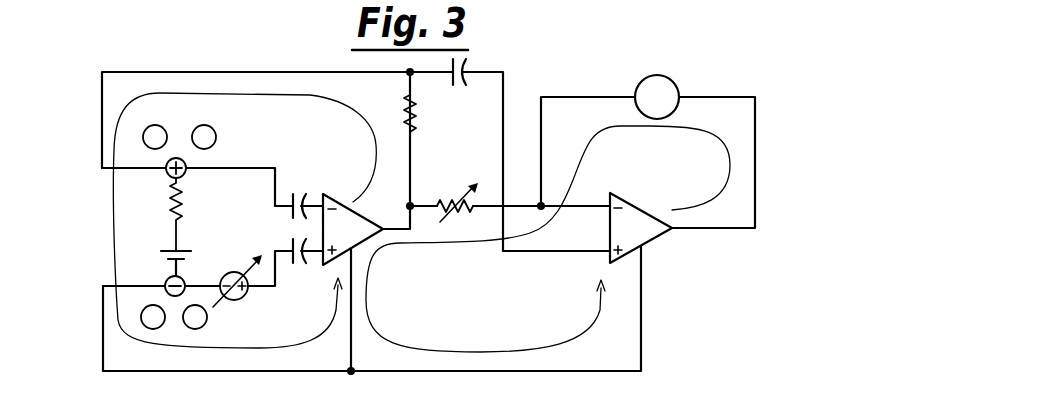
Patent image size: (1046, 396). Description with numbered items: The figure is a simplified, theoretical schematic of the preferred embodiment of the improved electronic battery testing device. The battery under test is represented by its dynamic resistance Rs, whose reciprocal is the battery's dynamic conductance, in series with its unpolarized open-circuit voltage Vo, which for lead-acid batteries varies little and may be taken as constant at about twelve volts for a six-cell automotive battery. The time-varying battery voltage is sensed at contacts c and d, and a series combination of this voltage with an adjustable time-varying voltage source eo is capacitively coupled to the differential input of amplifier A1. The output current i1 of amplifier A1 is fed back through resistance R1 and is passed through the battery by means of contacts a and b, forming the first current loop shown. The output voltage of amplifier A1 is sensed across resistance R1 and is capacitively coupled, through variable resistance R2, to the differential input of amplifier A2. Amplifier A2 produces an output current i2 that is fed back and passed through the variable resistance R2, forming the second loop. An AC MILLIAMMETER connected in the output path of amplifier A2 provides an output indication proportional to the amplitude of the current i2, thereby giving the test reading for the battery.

The amplifier A1 is at (353, 229).
The amplifier A2 is at (641, 228).
The resistance R1 is at (397, 113).
The variable resistance R2 is at (457, 213).
The battery dynamic resistance Rs is at (189, 214).
The unpolarized open-circuit voltage Vo is at (188, 262).
The adjustable time-varying voltage source eo is at (239, 295).
The contact a is at (168, 168).
The contact b is at (168, 286).
The contact c is at (186, 168).
The contact d is at (184, 286).
The output current of amplifier A1 i1 is at (244, 220).
The output current of amplifier A2 i2 is at (548, 239).
The ac milliameter AC MILLIAMMETER is at (643, 76).